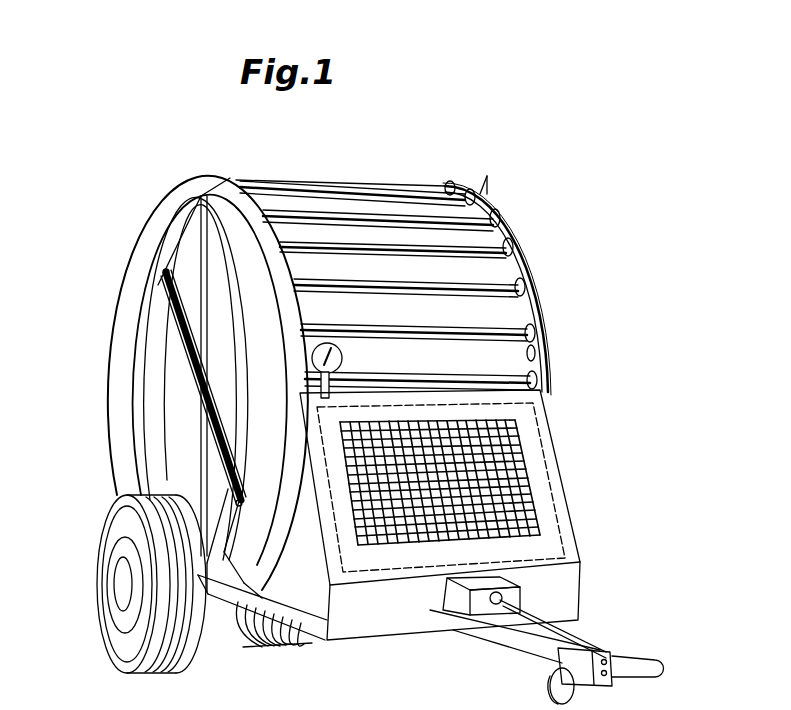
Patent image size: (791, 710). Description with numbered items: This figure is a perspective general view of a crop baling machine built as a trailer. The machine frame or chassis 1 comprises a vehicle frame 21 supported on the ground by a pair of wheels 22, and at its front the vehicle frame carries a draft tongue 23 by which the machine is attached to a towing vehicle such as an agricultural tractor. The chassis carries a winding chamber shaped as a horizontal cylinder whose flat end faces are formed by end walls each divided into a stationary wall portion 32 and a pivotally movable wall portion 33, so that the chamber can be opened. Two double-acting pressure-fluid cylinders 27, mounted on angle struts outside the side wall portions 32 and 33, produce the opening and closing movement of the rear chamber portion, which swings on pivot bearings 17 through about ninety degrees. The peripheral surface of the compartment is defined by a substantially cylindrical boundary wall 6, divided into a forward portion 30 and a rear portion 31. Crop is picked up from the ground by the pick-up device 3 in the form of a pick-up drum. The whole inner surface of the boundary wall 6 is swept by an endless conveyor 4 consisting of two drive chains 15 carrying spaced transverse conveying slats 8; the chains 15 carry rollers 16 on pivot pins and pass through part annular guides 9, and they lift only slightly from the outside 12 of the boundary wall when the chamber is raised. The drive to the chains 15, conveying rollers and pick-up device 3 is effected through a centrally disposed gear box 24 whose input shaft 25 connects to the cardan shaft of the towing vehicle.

The machine frame or chassis 1 is at (300, 656).
The pick-up device 3 is at (263, 647).
The endless conveyor 4 is at (352, 236).
The boundary wall 6 is at (478, 269).
The transverse conveying slats 8 is at (500, 330).
The part annular guides 9 is at (148, 238).
The outside of the boundary wall 12 is at (484, 238).
The drive chains 15 is at (540, 349).
The rollers 16 is at (478, 190).
The pivot bearings 17 is at (198, 180).
The vehicle frame 21 is at (363, 638).
The wheels 22 is at (110, 593).
The draft tongue 23 is at (607, 620).
The gear box 24 is at (457, 605).
The input shaft 25 is at (506, 608).
The double-acting pressure-fluid cylinders 27 is at (190, 366).
The forward portion of the boundary wall 30 is at (285, 178).
The rear portion of the boundary wall 31 is at (103, 414).
The stationary wall portion 32 is at (239, 237).
The pivotally movable wall portion 33 is at (158, 448).